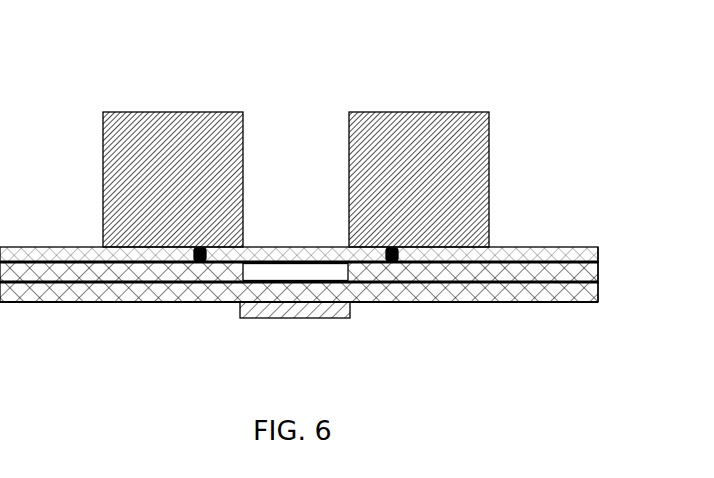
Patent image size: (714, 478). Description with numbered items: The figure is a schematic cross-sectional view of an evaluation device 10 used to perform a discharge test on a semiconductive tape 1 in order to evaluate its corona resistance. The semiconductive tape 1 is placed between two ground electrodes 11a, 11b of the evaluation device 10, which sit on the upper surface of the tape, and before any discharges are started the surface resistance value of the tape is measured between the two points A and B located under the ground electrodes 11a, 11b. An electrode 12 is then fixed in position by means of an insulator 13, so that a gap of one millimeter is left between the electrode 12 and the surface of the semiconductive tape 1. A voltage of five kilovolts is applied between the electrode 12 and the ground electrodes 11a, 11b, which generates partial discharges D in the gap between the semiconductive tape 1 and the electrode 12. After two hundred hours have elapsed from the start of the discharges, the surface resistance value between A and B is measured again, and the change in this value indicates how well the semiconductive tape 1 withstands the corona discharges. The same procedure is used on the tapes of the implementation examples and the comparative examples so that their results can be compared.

The semiconductive tape 1 is at (547, 253).
The evaluation device 10 is at (327, 211).
The ground electrode 11a is at (243, 151).
The ground electrode 11b is at (489, 147).
The electrode 12 is at (308, 266).
The insulator 13 is at (600, 262).
The measurement point A is at (198, 261).
The measurement point B is at (394, 261).
The partial discharges D is at (272, 266).